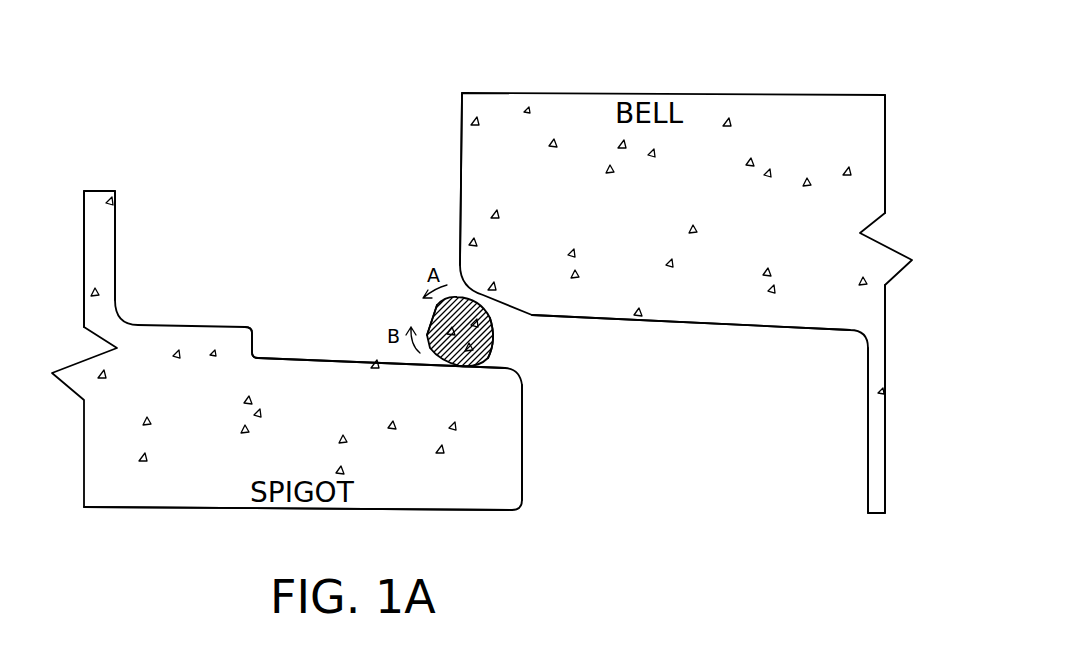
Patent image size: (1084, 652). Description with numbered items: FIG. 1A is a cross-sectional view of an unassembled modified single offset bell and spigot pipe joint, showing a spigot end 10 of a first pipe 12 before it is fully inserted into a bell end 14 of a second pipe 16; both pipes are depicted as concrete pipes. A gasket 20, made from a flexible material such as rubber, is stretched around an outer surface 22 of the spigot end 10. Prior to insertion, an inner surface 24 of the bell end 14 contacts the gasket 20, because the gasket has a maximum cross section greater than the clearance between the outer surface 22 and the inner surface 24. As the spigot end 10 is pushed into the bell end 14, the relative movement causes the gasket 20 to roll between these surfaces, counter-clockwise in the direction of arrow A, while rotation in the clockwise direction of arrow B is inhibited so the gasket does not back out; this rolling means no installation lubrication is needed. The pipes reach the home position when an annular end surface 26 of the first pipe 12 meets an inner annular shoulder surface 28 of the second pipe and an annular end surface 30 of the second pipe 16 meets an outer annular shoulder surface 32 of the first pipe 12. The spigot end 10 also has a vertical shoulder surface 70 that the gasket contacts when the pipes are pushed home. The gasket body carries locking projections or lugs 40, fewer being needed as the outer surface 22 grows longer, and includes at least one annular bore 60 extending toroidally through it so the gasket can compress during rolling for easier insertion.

The spigot end 10 is at (378, 488).
The first pipe 12 is at (115, 483).
The bell end 14 is at (573, 115).
The second pipe 16 is at (867, 132).
The gasket 20 is at (492, 338).
The outer surface 22 is at (334, 363).
The inner surface 24 is at (602, 322).
The annular end surface 26 is at (525, 447).
The inner annular shoulder surface 28 is at (867, 448).
The annular end surface 30 is at (460, 195).
The outer annular shoulder surface 32 is at (116, 245).
The locking projections or lugs 40 is at (425, 332).
The annular opening or bore 60 is at (488, 356).
The vertical shoulder surface 70 is at (253, 337).